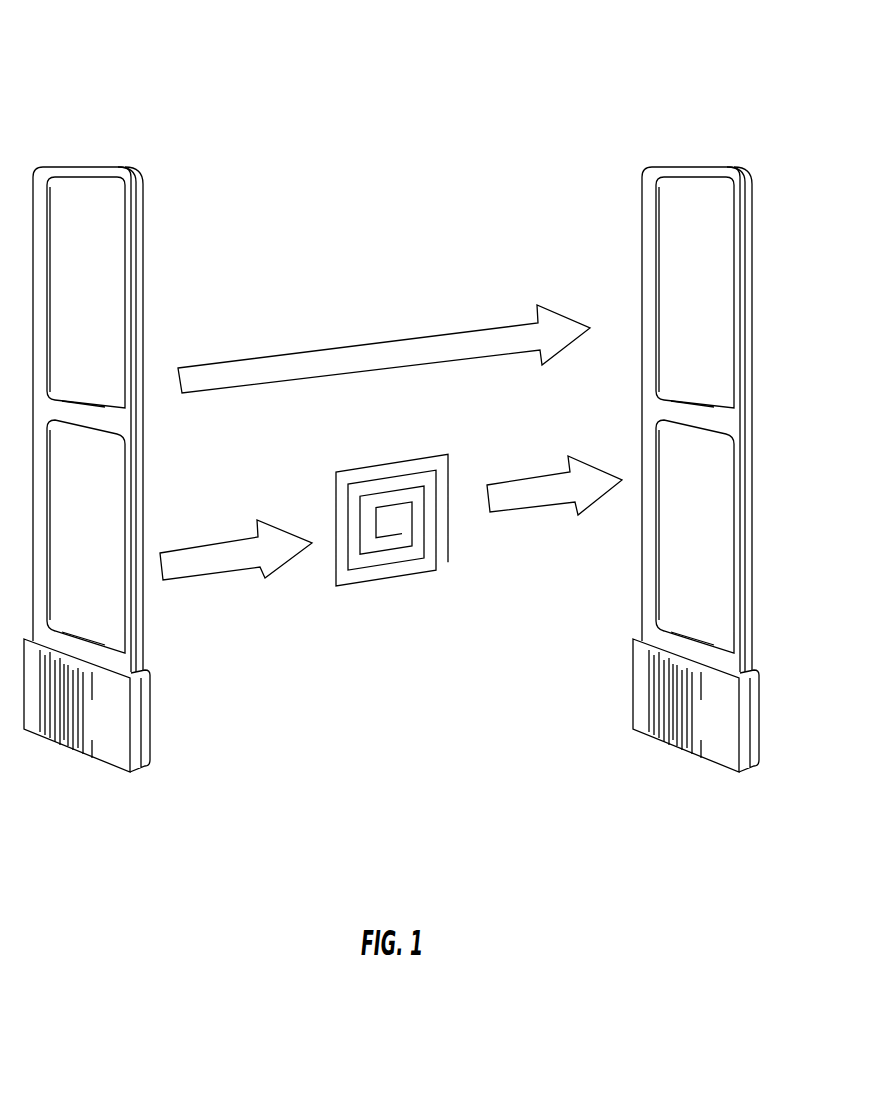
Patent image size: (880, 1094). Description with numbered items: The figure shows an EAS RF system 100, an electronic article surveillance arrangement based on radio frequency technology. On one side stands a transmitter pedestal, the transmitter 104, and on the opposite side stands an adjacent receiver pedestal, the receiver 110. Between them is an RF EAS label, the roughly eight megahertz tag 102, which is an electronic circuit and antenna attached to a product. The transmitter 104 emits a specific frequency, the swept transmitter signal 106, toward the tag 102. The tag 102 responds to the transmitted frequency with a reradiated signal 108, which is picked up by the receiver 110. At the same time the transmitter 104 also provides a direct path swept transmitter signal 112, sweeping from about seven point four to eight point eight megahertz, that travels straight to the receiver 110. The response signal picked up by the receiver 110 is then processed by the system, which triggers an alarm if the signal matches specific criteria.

The EAS RF system 100 is at (215, 72).
The ~8 MHz tag 102 is at (378, 676).
The transmitter 104 is at (66, 860).
The swept transmitter signal 106 is at (233, 716).
The reradiated signal 108 is at (571, 622).
The receiver 110 is at (713, 859).
The direct path swept transmitter signal 7.4 MHz to 8.8 MHz 112 is at (353, 325).